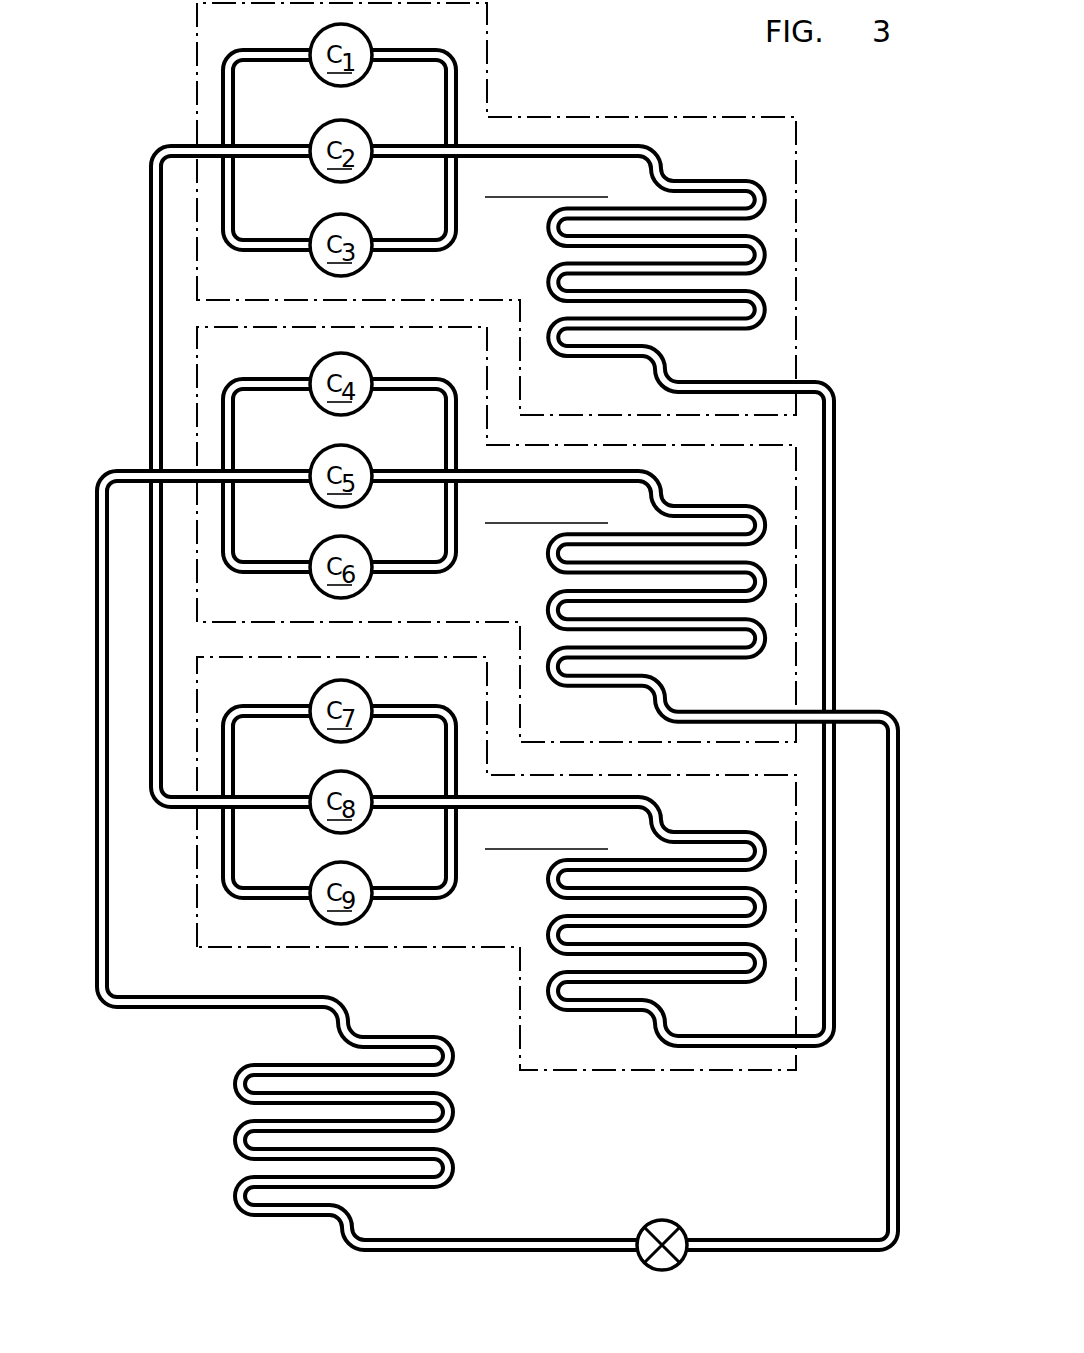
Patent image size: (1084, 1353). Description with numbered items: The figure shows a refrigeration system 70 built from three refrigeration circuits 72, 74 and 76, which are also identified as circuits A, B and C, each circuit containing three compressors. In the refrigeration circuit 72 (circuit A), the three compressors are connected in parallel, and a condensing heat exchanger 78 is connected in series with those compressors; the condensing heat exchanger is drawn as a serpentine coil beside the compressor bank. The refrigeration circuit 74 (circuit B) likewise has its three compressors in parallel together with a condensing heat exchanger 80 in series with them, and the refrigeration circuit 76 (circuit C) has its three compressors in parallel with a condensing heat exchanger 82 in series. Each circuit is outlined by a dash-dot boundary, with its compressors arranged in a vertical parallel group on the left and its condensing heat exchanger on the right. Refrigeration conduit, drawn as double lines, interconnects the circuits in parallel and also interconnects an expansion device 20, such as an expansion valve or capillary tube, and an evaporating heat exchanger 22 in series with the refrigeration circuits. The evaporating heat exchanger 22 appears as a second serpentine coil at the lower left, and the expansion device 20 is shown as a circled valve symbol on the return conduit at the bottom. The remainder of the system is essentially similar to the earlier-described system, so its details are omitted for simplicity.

The refrigeration system 70 is at (884, 225).
The refrigeration circuit A 72 is at (610, 117).
The refrigeration circuit B 74 is at (452, 622).
The refrigeration circuit C 76 is at (500, 948).
The condensing heat exchanger 78 is at (713, 180).
The condensing heat exchanger 80 is at (736, 510).
The condensing heat exchanger 82 is at (741, 835).
The evaporating heat exchanger 22 is at (453, 1103).
The expansion device 20 is at (683, 1230).